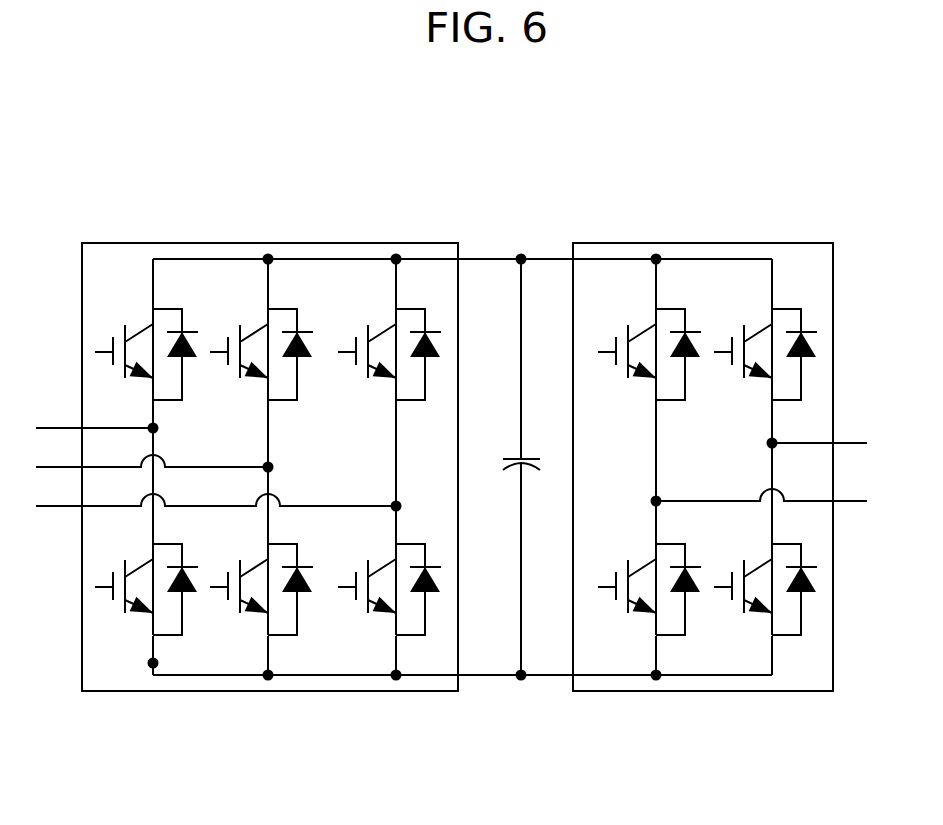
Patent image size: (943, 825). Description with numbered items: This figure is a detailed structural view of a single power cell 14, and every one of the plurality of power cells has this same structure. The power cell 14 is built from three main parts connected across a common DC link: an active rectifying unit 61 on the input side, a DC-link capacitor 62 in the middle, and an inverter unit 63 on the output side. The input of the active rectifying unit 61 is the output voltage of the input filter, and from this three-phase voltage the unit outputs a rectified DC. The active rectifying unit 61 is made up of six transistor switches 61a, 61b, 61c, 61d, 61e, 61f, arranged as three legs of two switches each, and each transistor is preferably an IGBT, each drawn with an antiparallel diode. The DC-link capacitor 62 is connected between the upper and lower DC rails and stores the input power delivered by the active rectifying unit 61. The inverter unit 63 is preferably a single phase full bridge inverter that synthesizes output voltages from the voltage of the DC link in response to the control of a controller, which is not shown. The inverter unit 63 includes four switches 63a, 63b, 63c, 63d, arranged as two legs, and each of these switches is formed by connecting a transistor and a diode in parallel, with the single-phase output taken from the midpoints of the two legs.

The power cell 14 is at (761, 175).
The active rectifying unit 61 is at (280, 243).
The transistor switch 61a is at (146, 344).
The transistor switch 61b is at (146, 579).
The transistor switch 61c is at (261, 344).
The transistor switch 61d is at (261, 579).
The transistor switch 61e is at (389, 344).
The transistor switch 61f is at (389, 579).
The DC-link capacitor 62 is at (513, 457).
The inverter unit 63 is at (702, 243).
The switch 63a is at (649, 344).
The switch 63b is at (649, 579).
The switch 63c is at (765, 344).
The switch 63d is at (765, 579).